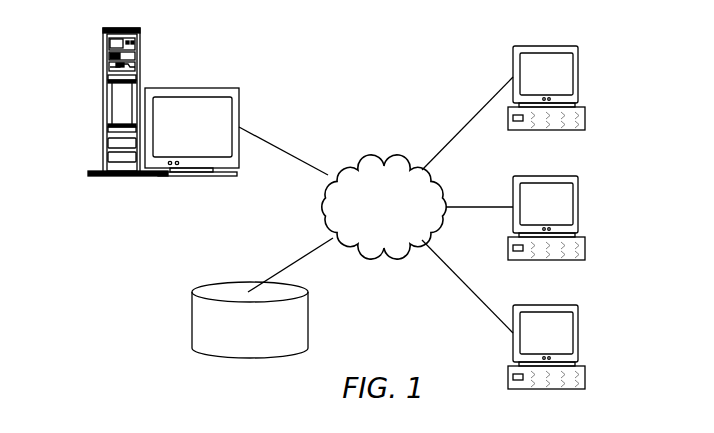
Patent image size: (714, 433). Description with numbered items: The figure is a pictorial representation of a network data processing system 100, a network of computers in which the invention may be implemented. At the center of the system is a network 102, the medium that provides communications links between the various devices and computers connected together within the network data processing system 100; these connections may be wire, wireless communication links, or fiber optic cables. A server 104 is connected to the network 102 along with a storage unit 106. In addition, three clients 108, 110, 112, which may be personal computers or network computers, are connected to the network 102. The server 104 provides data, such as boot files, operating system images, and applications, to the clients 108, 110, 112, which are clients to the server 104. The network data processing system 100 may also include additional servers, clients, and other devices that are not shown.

The network data processing system 100 is at (431, 55).
The network 102 is at (356, 161).
The server 104 is at (103, 102).
The storage unit 106 is at (192, 321).
The client 108 is at (578, 76).
The client 110 is at (571, 230).
The client 112 is at (572, 359).